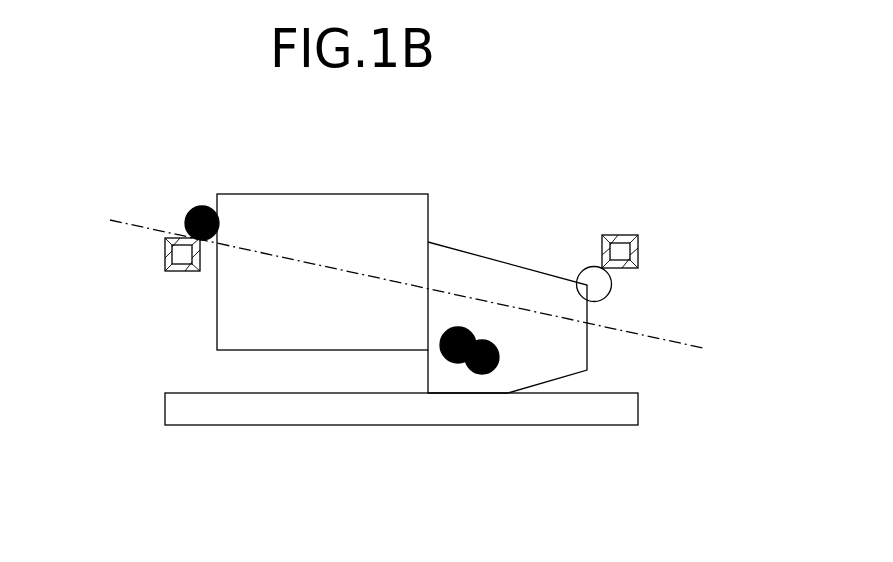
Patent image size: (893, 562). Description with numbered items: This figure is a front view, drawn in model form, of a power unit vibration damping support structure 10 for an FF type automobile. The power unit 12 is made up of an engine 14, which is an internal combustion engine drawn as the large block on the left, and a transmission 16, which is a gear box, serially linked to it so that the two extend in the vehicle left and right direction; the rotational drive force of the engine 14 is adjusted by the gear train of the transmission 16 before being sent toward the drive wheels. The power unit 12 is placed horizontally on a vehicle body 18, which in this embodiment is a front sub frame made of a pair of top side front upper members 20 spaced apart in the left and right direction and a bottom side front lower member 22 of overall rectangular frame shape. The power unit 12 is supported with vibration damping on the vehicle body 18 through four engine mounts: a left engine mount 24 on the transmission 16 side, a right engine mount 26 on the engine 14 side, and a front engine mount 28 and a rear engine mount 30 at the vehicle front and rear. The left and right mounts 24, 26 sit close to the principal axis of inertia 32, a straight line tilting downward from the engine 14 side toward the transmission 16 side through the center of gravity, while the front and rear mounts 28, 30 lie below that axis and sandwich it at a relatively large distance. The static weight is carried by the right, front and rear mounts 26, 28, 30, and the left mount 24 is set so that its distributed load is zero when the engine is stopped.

The power unit vibration damping support structure 10 is at (622, 150).
The power unit 12 is at (449, 174).
The engine 14 is at (310, 212).
The transmission 16 is at (507, 283).
The vehicle body 18 is at (367, 430).
The front upper member 20 is at (165, 253).
The front lower member 22 is at (343, 415).
The left engine mount 24 is at (598, 285).
The right engine mount 26 is at (198, 218).
The front engine mount 28 is at (488, 365).
The rear engine mount 30 is at (452, 355).
The principal axis of inertia 32 is at (135, 218).